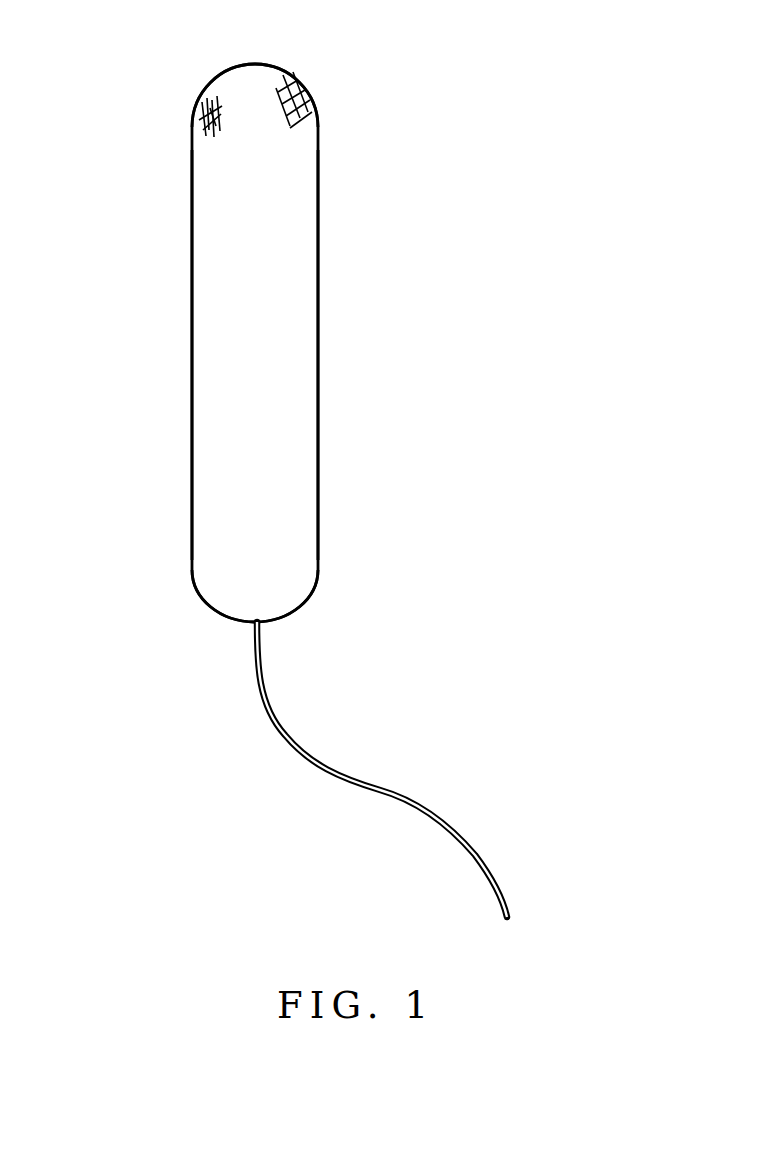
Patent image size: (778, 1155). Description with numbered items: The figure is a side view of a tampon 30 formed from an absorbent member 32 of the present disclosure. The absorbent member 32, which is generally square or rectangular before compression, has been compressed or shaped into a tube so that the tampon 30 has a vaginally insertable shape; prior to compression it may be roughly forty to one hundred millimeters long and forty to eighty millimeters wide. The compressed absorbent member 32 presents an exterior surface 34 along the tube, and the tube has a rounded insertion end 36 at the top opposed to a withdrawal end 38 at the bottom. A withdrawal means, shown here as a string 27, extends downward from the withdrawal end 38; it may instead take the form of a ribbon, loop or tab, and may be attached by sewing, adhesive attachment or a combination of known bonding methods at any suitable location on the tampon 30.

The string 27 is at (487, 863).
The tampon 30 is at (171, 175).
The absorbent member 32 is at (190, 423).
The exterior surface 34 is at (285, 210).
The insertion end 36 is at (299, 61).
The withdrawal end 38 is at (337, 619).